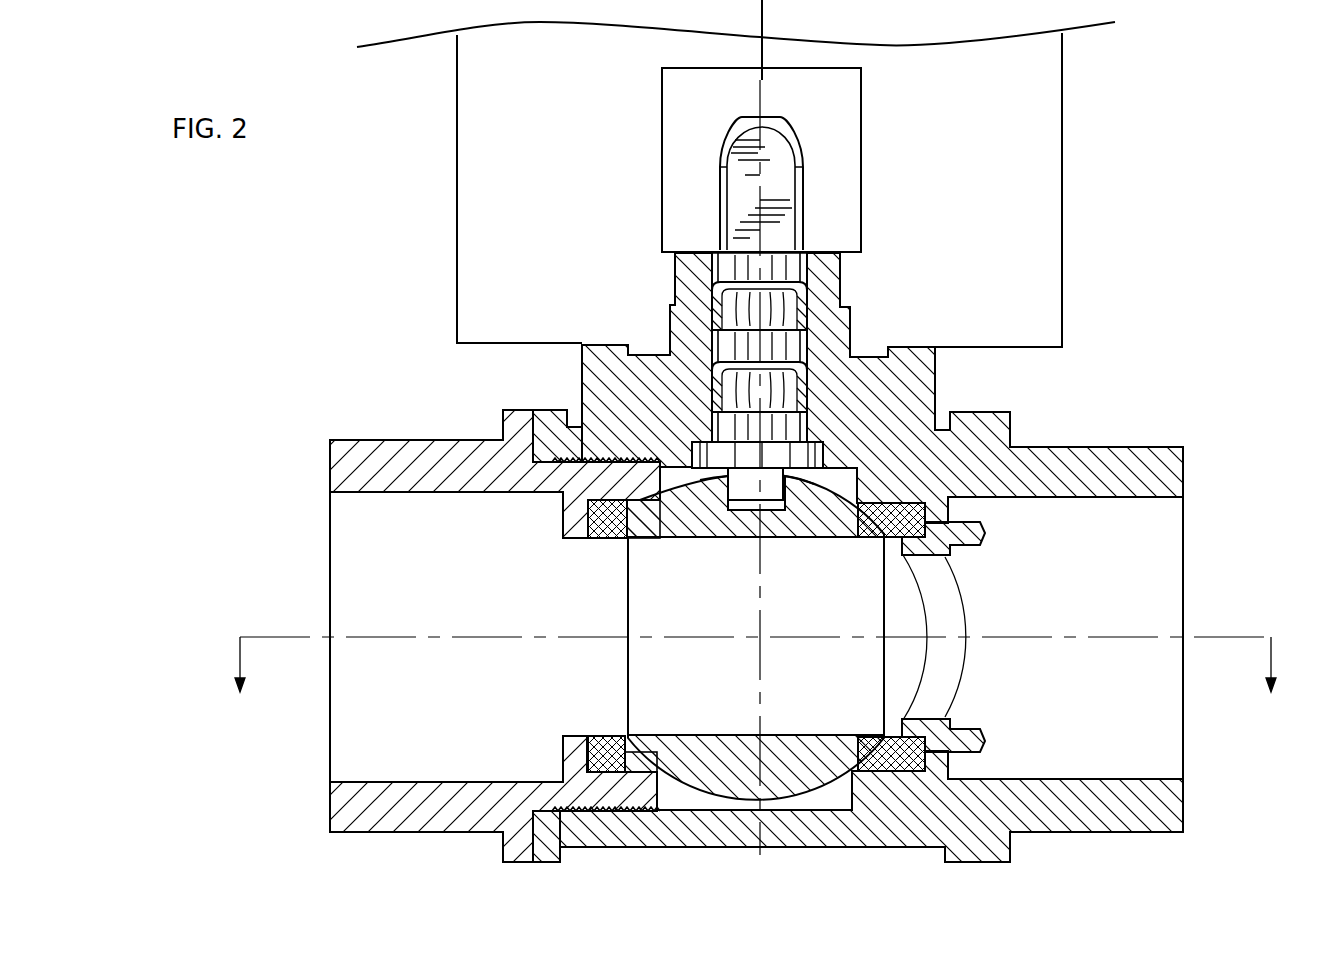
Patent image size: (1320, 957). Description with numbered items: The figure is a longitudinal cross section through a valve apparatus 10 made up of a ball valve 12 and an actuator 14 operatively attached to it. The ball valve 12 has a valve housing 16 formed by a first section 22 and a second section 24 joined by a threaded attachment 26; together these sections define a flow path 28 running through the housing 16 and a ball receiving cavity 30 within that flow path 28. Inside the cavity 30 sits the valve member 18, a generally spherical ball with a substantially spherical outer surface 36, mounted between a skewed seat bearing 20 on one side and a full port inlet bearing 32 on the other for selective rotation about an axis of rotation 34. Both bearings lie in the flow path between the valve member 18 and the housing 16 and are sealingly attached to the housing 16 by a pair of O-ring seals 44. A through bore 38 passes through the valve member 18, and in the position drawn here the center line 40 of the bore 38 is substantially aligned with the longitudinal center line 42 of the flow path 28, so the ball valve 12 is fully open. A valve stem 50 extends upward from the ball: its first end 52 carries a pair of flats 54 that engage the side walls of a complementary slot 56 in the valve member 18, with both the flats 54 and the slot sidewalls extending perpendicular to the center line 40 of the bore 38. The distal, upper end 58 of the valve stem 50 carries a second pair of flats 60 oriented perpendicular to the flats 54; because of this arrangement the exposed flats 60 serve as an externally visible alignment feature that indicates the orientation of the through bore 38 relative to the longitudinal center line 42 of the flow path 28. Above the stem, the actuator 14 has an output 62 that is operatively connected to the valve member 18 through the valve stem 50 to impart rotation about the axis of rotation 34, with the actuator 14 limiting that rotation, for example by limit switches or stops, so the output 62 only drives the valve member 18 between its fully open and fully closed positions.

The valve apparatus 10 is at (1120, 280).
The ball valve 12 is at (1145, 466).
The actuator 14 is at (1053, 84).
The valve housing 16 is at (1143, 824).
The valve member 18 is at (765, 790).
The skewed seat bearing 20 is at (938, 760).
The first section 22 is at (1143, 795).
The second section 24 is at (358, 803).
The threaded attachment 26 is at (557, 812).
The flow path 28 is at (372, 568).
The ball receiving cavity 30 is at (697, 798).
The full port inlet bearing 32 is at (626, 760).
The axis of rotation 34 is at (765, 14).
The spherical outer surface 36 is at (885, 772).
The through bore 38 is at (664, 520).
The center line of the bore 40 is at (531, 640).
The longitudinal center line of the flow path 42 is at (1086, 641).
The O-ring seals 44 is at (607, 500).
The valve stem 50 is at (808, 263).
The first end of the valve stem 52 is at (772, 500).
The flats on the first end 54 is at (703, 500).
The slot 56 is at (752, 505).
The distal end of the valve stem 58 is at (720, 176).
The flats on the distal end 60 is at (745, 203).
The output 62 is at (862, 165).